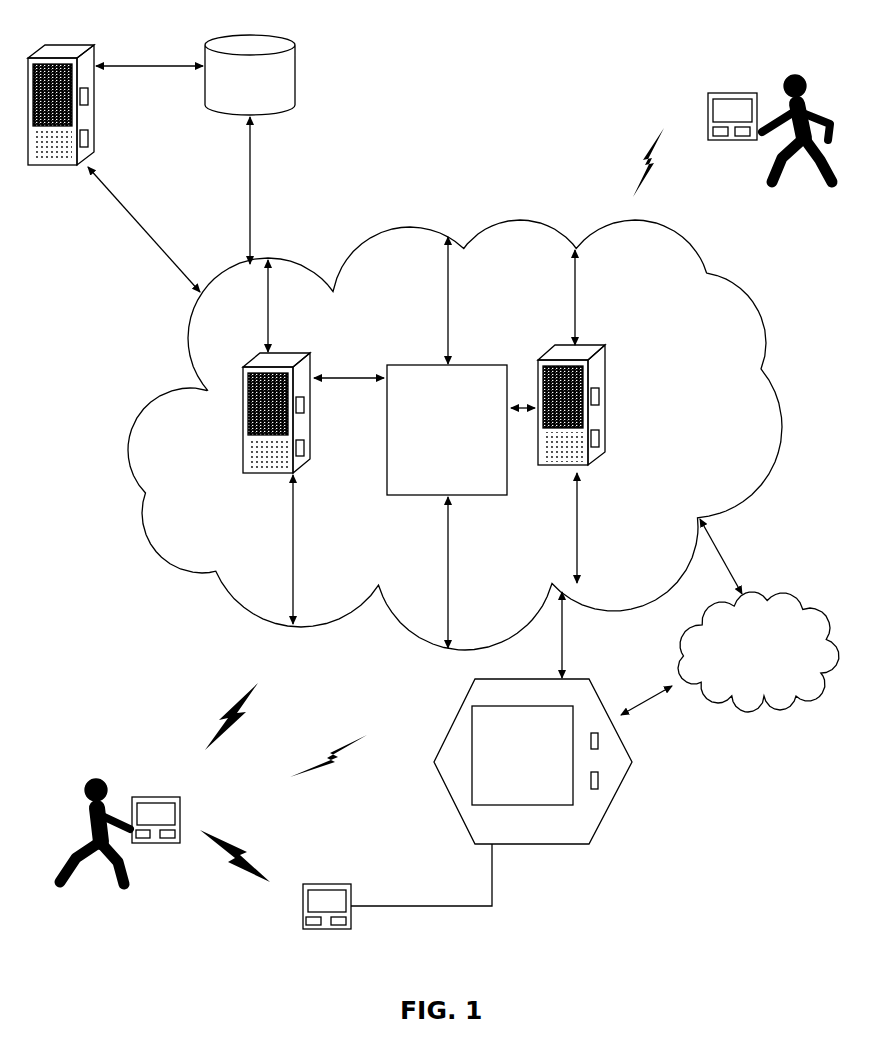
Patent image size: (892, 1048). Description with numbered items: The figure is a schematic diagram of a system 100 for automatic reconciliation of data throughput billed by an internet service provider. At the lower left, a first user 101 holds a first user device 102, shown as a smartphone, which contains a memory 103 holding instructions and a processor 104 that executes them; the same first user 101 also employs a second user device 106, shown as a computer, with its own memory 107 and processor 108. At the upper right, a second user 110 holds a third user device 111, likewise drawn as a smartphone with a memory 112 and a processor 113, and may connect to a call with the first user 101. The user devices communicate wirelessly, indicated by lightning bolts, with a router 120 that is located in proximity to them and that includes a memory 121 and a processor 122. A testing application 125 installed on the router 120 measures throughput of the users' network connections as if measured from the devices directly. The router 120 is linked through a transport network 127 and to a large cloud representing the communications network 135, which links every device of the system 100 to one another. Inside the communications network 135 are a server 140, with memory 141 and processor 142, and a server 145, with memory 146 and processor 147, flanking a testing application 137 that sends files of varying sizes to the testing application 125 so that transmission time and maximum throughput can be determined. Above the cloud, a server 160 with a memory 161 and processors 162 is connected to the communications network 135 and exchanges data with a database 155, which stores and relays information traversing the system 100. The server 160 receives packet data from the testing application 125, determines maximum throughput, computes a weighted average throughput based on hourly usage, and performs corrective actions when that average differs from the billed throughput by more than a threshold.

The system 100 is at (450, 165).
The first user 101 is at (62, 890).
The first user device 102 is at (153, 834).
The memory 103 is at (143, 843).
The processor 104 is at (168, 843).
The second user device 106 is at (325, 921).
The memory 107 is at (314, 929).
The processor 108 is at (340, 929).
The second user 110 is at (835, 184).
The third user device 111 is at (730, 131).
The memory 112 is at (718, 140).
The processor 113 is at (745, 140).
The router 120 is at (566, 808).
The memory 121 is at (598, 741).
The processor 122 is at (598, 780).
The testing application 125 is at (522, 755).
The transport network 127 is at (758, 652).
The communications network 135 is at (137, 388).
The testing application 137 is at (447, 430).
The server 140 is at (264, 413).
The memory 141 is at (304, 405).
The processor 142 is at (304, 448).
The server 145 is at (626, 405).
The memory 146 is at (600, 397).
The processor 147 is at (600, 438).
The database 155 is at (250, 75).
The server 160 is at (107, 149).
The memory 161 is at (88, 139).
The processors 162 is at (88, 97).